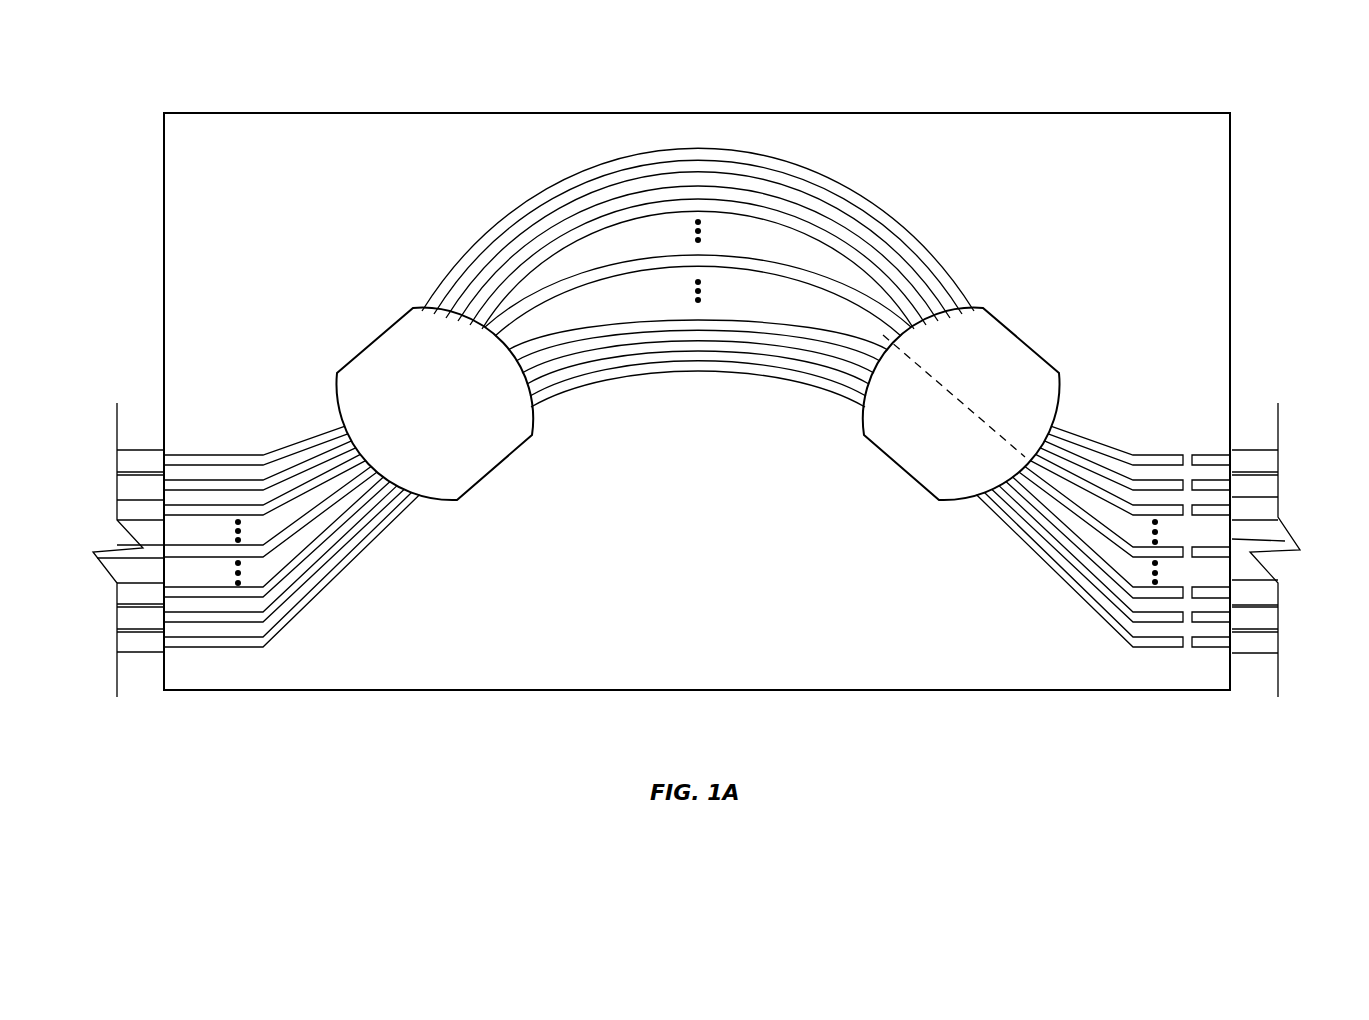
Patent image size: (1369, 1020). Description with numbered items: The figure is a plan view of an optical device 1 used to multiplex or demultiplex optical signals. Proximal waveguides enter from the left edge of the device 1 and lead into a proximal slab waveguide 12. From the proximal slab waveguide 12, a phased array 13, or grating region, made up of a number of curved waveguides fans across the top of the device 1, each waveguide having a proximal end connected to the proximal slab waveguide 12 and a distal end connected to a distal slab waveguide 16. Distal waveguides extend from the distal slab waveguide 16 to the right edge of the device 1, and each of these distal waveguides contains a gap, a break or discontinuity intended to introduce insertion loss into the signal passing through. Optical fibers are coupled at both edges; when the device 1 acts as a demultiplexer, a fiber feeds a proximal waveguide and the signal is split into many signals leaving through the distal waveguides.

The device 1 is at (922, 108).
The phased array 13 is at (672, 280).
The proximal slab waveguide 12 is at (420, 404).
The distal slab waveguide 16 is at (970, 404).